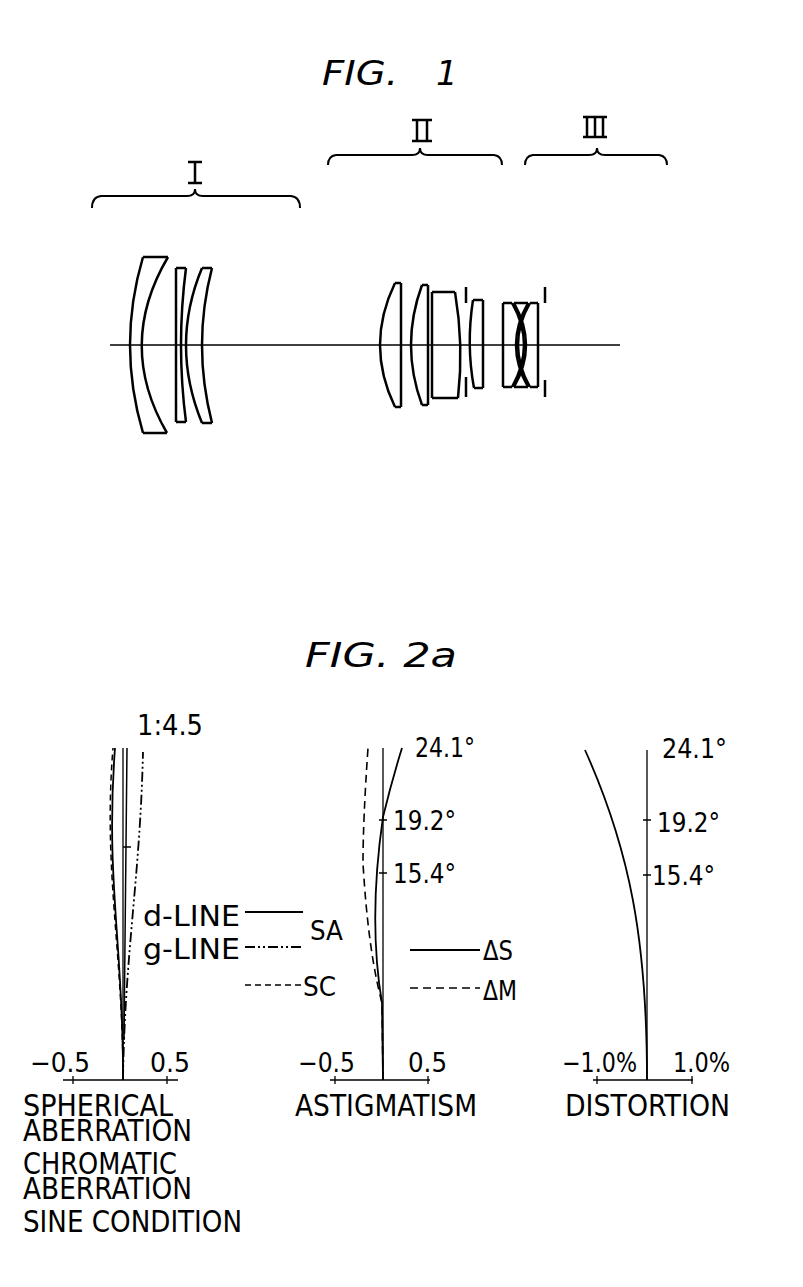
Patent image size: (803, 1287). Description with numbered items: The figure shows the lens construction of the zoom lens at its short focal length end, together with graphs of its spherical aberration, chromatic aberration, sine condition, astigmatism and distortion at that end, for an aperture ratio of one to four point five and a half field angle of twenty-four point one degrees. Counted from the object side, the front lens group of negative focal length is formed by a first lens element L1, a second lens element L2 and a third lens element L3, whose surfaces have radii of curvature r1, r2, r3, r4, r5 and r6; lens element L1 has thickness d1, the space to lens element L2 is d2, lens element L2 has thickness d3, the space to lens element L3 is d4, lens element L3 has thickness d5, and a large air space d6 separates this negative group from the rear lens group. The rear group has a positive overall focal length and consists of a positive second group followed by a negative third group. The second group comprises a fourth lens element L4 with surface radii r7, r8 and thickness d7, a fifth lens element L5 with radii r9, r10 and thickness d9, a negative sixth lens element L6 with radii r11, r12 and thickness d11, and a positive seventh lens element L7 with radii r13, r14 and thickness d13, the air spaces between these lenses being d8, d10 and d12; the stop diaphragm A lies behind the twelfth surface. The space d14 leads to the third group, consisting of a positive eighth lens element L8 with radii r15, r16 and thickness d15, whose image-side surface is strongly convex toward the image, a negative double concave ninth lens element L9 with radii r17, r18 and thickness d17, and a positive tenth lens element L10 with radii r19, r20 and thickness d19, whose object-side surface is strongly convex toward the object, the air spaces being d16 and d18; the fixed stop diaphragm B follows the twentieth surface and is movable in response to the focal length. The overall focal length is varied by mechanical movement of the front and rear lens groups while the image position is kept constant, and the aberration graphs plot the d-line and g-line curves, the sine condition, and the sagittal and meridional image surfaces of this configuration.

The radius of curvature of the first surface r1 is at (133, 292).
The radius of curvature of the second surface r2 is at (163, 282).
The radius of curvature of the third surface r3 is at (177, 272).
The radius of curvature of the fourth surface r4 is at (186, 278).
The radius of curvature of the fifth surface r5 is at (200, 280).
The radius of curvature of the sixth surface r6 is at (212, 283).
The radius of curvature of the seventh surface r7 is at (382, 310).
The radius of curvature of the eighth surface r8 is at (400, 283).
The radius of curvature of the ninth surface r9 is at (417, 287).
The radius of curvature of the tenth surface r10 is at (430, 290).
The radius of curvature of the eleventh surface r11 is at (435, 292).
The radius of curvature of the twelfth surface r12 is at (452, 300).
The radius of curvature of the thirteenth surface r13 is at (472, 298).
The radius of curvature of the fourteenth surface r14 is at (483, 298).
The radius of curvature of the fifteenth surface r15 is at (503, 303).
The radius of curvature of the sixteenth surface r16 is at (514, 302).
The radius of curvature of the seventeenth surface r17 is at (521, 302).
The radius of curvature of the eighteenth surface r18 is at (529, 302).
The radius of curvature of the nineteenth surface r19 is at (536, 305).
The radius of curvature of the twentieth surface r20 is at (540, 310).
The lens thickness with respect to the first surface d1 is at (133, 347).
The space between adjacent lenses d2 is at (148, 350).
The lens thickness with respect to the third surface d3 is at (178, 347).
The space between adjacent lenses d4 is at (187, 350).
The lens thickness with respect to the fifth surface d5 is at (200, 350).
The space between adjacent lenses d6 is at (305, 346).
The lens thickness with respect to the seventh surface d7 is at (382, 350).
The space between adjacent lenses d8 is at (405, 392).
The lens thickness with respect to the ninth surface d9 is at (412, 408).
The space between adjacent lenses d10 is at (428, 404).
The lens thickness with respect to the eleventh surface d11 is at (436, 402).
The space between adjacent lenses d12 is at (467, 400).
The lens thickness with respect to the thirteenth surface d13 is at (492, 388).
The space between adjacent lenses d14 is at (506, 392).
The lens thickness with respect to the fifteenth surface d15 is at (512, 392).
The space between adjacent lenses d16 is at (520, 392).
The lens thickness with respect to the seventeenth surface d17 is at (528, 391).
The space between adjacent lenses d18 is at (535, 390).
The lens thickness with respect to the nineteenth surface d19 is at (548, 352).
The first lens element L1 is at (142, 435).
The second lens element L2 is at (180, 424).
The third lens element L3 is at (210, 425).
The fourth lens element L4 is at (388, 402).
The fifth lens element L5 is at (422, 406).
The sixth lens element L6 is at (452, 400).
The seventh lens element L7 is at (478, 390).
The eighth lens element L8 is at (507, 389).
The ninth lens element L9 is at (521, 389).
The tenth lens element L10 is at (540, 332).
The stop diaphragm A is at (466, 292).
The fixed stop diaphragm B is at (548, 294).